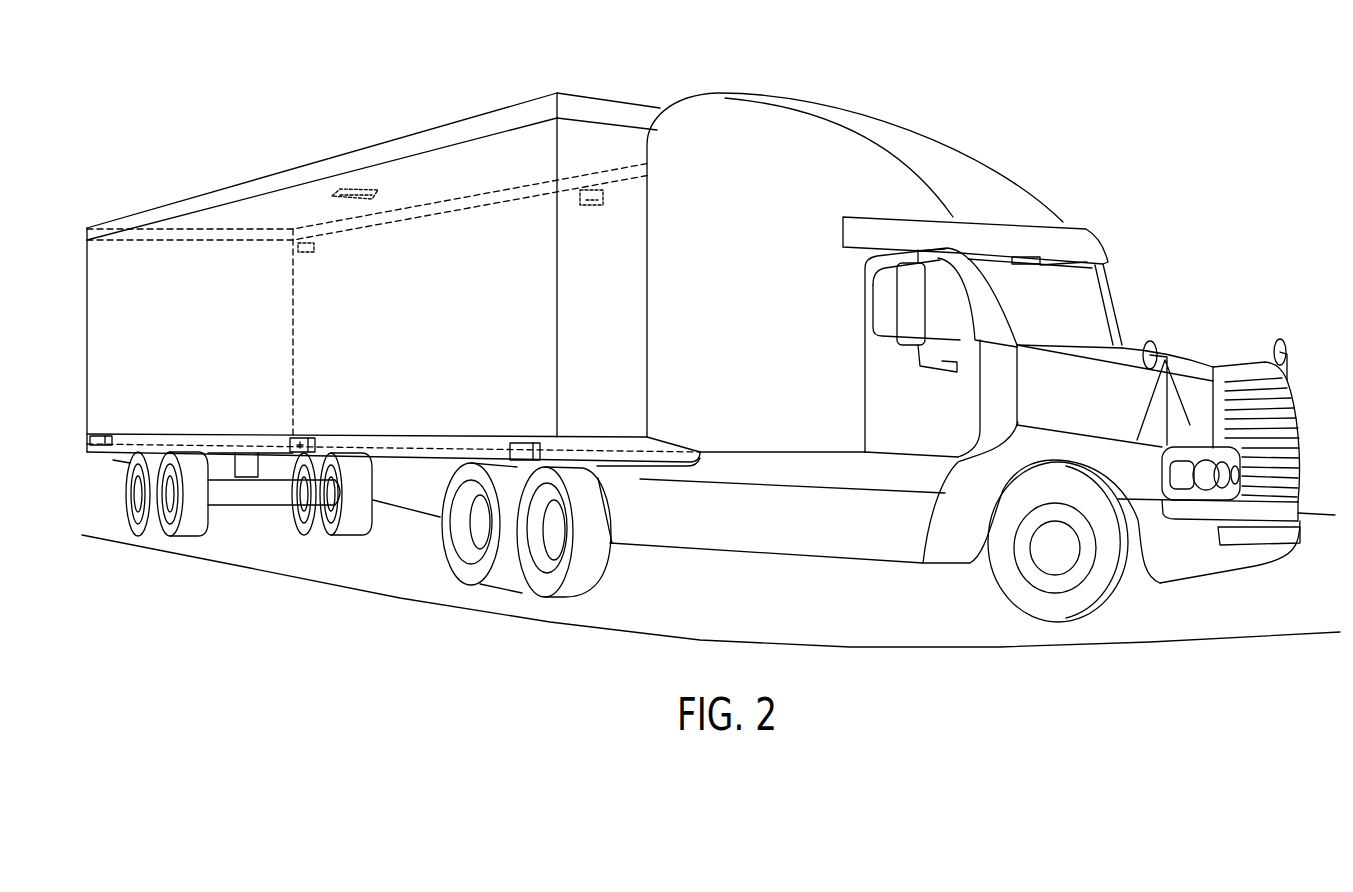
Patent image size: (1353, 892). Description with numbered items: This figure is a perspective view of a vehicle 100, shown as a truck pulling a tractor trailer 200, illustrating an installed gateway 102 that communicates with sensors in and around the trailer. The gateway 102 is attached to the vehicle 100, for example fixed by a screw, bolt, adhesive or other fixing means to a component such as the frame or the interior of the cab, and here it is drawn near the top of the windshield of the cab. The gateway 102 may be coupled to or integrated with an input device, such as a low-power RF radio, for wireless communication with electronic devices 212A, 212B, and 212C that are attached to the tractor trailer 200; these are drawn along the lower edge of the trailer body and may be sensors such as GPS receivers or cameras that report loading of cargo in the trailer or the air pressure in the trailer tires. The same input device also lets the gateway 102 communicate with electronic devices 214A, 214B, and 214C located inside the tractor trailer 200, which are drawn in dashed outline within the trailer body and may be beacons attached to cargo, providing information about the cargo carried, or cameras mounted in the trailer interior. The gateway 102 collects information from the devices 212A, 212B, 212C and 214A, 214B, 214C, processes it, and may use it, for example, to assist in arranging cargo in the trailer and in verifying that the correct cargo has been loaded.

The vehicle 100 is at (1093, 233).
The gateway 102 is at (1040, 265).
The tractor trailer 200 is at (425, 130).
The electronic device 212A is at (100, 447).
The electronic device 212B is at (297, 455).
The electronic device 212C is at (520, 460).
The electronic device 214A is at (298, 240).
The electronic device 214B is at (345, 188).
The electronic device 214C is at (592, 190).